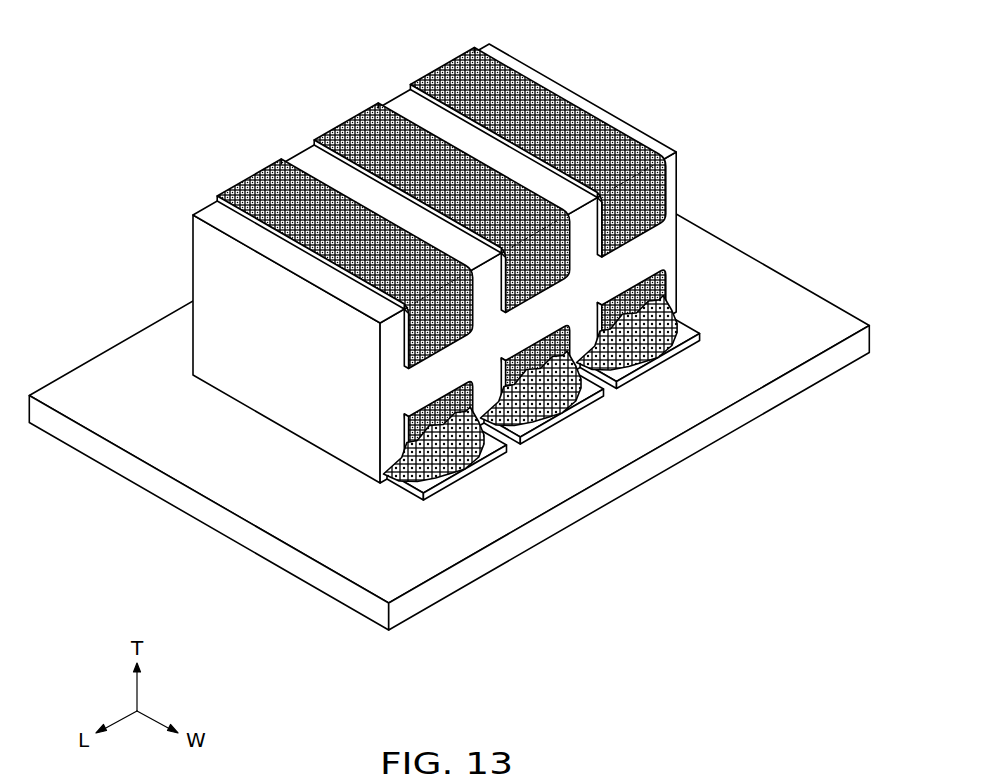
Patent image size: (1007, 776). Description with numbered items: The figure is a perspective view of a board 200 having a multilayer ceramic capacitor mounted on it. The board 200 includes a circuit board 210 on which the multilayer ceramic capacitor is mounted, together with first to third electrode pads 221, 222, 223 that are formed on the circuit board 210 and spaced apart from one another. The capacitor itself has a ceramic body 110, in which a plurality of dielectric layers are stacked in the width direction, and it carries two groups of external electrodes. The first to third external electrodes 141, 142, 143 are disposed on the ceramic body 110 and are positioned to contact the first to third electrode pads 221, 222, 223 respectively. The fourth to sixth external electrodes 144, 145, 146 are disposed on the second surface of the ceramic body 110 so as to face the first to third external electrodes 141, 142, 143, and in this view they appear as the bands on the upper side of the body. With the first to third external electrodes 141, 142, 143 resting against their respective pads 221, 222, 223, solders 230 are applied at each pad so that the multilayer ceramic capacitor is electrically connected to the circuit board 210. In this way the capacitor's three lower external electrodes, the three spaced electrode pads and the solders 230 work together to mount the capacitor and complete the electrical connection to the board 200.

The ceramic body 110 is at (560, 98).
The first external electrode 141 is at (440, 423).
The second external electrode 142 is at (658, 271).
The third external electrode 143 is at (524, 352).
The fourth external electrode 144 is at (255, 187).
The fifth external electrode 145 is at (447, 73).
The sixth external electrode 146 is at (350, 130).
The board having a multilayer ceramic capacitor 200 is at (454, 328).
The circuit board 210 is at (364, 558).
The first electrode pad 221 is at (437, 497).
The second electrode pad 222 is at (635, 383).
The third electrode pad 223 is at (535, 438).
The solder 230 is at (458, 452).